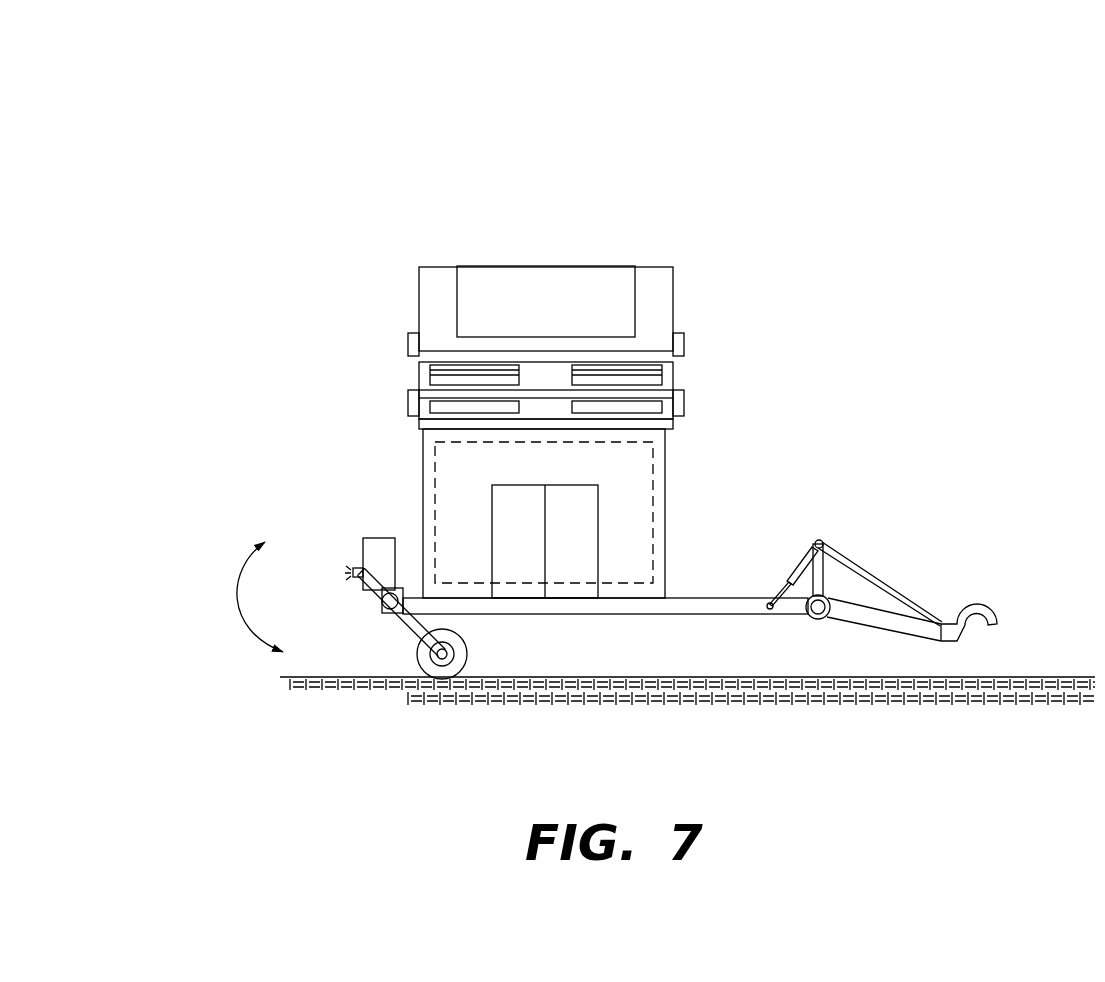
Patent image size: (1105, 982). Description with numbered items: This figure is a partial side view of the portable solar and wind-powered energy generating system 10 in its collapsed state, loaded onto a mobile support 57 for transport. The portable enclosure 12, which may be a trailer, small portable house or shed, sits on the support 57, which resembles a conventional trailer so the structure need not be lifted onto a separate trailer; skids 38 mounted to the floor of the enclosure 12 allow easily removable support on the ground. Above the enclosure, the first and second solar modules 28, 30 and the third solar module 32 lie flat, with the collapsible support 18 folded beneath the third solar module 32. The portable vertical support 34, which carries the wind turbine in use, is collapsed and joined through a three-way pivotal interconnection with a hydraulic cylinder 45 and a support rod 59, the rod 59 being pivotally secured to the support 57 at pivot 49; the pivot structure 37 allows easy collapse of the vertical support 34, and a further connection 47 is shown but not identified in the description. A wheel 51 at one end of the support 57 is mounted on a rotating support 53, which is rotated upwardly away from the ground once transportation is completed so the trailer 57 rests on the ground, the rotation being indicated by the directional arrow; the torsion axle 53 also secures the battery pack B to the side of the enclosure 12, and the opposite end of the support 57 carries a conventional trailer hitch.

The portable solar and wind-powered energy generating system 10 is at (405, 115).
The collapsible support 18 is at (443, 238).
The third solar module 32 is at (420, 322).
The second solar module 30 is at (420, 377).
The first solar module 28 is at (420, 415).
The portable enclosure 12 is at (423, 509).
The storage battery or battery bank B is at (363, 546).
The skids 38 is at (345, 603).
The rotating support 53 is at (407, 628).
The wheel 51 is at (467, 643).
The mobile support 57 is at (657, 614).
The support rod 59 is at (826, 572).
The pivot structure 37 is at (818, 524).
The pivot point 49 is at (828, 620).
The hydraulic cylinder 45 is at (787, 558).
The cylinder mount pivot 47 is at (768, 604).
The portable vertical support 34 is at (898, 590).